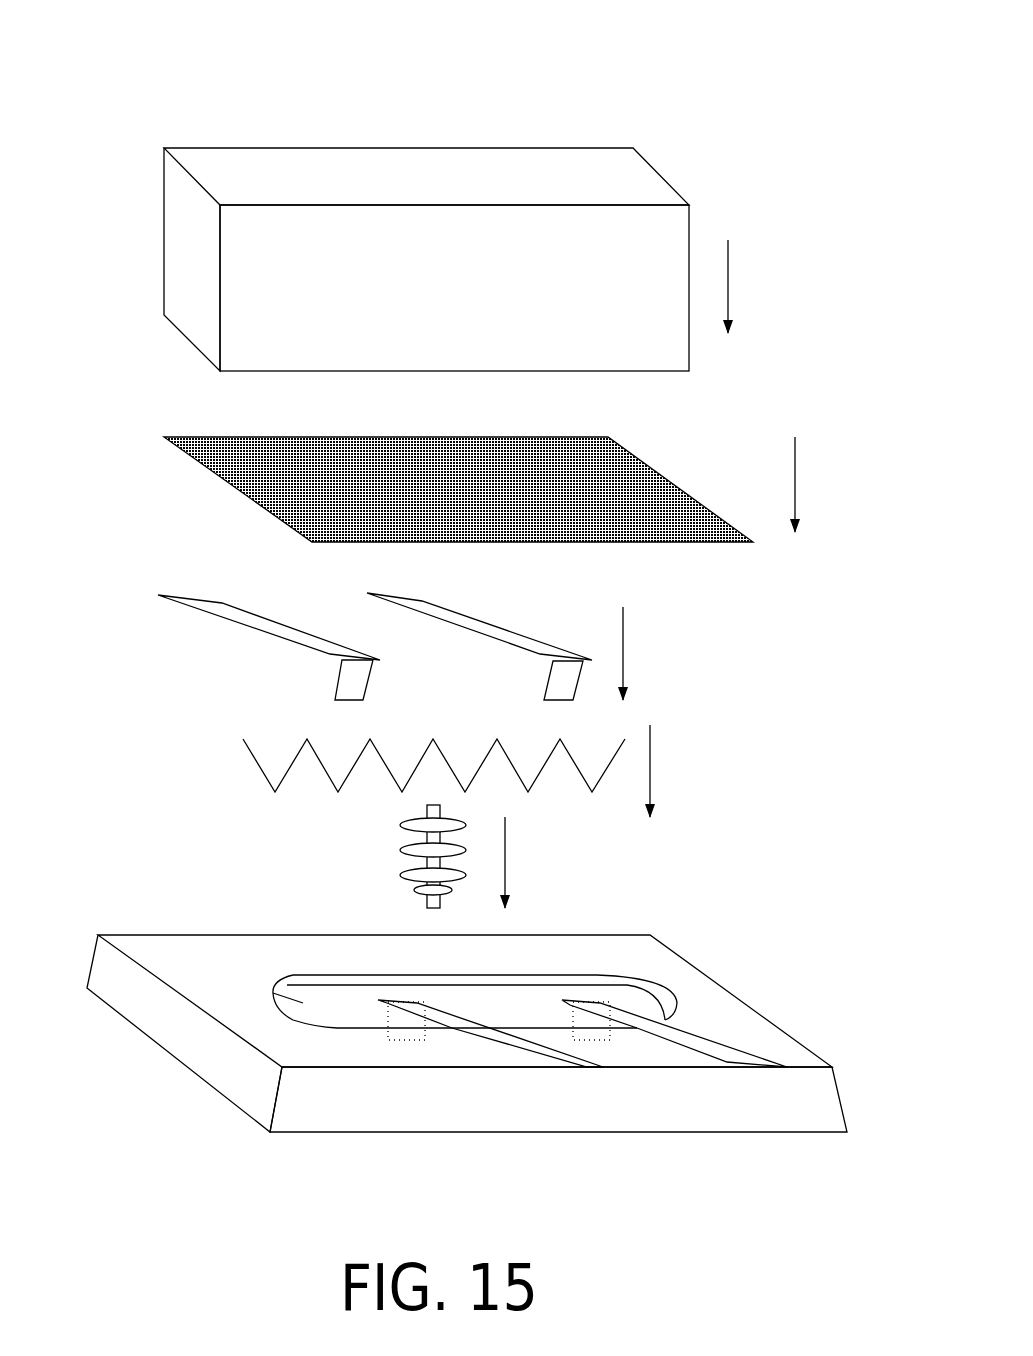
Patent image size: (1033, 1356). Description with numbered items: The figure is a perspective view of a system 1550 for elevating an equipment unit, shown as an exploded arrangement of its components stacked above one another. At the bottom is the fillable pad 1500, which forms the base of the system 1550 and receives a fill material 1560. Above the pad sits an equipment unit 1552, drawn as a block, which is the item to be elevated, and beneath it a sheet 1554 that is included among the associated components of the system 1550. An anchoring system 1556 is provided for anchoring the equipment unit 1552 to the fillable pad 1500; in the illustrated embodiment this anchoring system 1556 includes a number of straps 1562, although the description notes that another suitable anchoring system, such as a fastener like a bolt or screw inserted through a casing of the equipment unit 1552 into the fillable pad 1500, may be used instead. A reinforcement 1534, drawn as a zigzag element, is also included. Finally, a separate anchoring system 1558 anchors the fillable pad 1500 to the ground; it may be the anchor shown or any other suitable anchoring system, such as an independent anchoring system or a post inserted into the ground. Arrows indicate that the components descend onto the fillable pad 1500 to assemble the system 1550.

The system for elevating an equipment unit 1550 is at (675, 58).
The equipment unit 1552 is at (660, 193).
The sheet 1554 is at (665, 512).
The anchoring system 1556 is at (737, 1050).
The straps 1562 is at (203, 603).
The reinforcement 1534 is at (257, 755).
The anchoring system 1558 is at (407, 876).
The fillable pad 1500 is at (725, 1003).
The fill material 1560 is at (303, 1003).